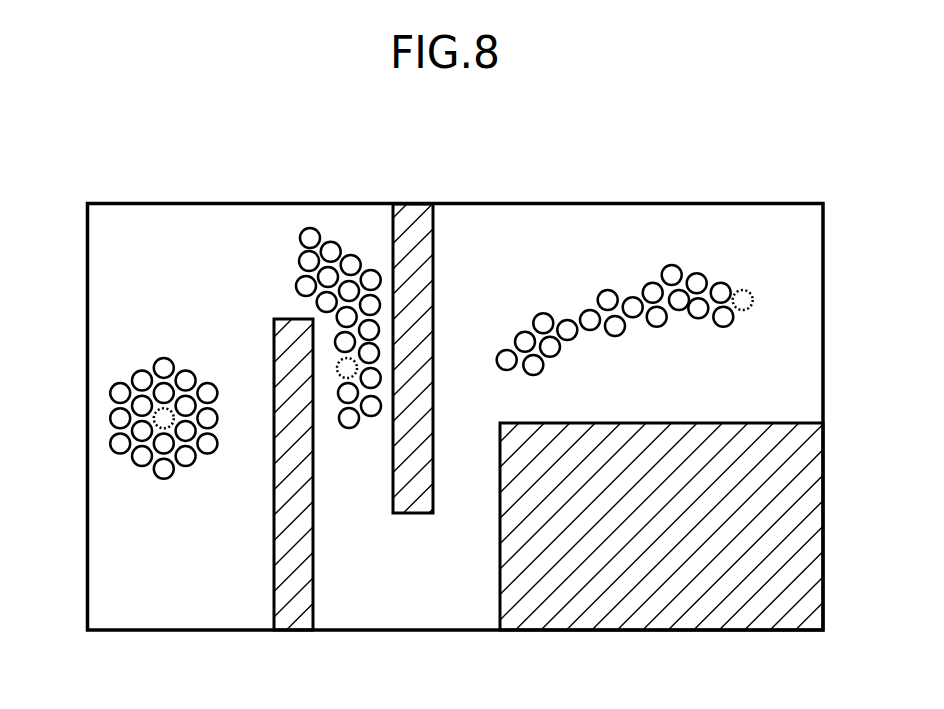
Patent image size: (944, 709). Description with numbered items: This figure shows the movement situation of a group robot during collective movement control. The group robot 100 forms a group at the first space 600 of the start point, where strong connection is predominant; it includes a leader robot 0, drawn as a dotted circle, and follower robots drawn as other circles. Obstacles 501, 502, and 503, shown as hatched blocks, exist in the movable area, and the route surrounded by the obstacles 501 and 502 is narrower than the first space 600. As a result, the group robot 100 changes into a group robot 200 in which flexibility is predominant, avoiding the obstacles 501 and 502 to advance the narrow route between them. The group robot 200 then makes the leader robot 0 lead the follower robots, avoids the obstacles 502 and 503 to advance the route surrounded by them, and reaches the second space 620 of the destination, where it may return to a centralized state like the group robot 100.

The leader robot 0 is at (153, 417).
The group robot 100 is at (100, 462).
The group robot 200 is at (348, 227).
The obstacle 501 is at (292, 612).
The obstacle 502 is at (413, 225).
The obstacle 503 is at (805, 507).
The first space 600 is at (125, 292).
The second space 620 is at (549, 250).